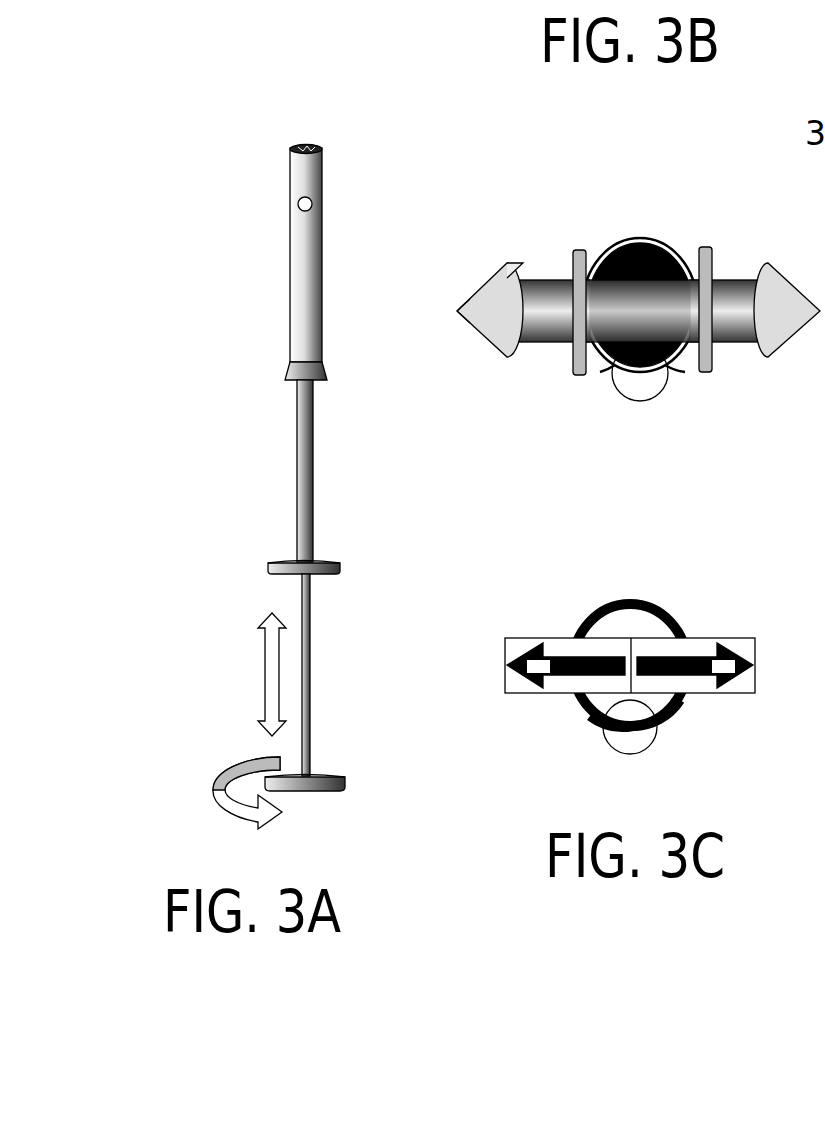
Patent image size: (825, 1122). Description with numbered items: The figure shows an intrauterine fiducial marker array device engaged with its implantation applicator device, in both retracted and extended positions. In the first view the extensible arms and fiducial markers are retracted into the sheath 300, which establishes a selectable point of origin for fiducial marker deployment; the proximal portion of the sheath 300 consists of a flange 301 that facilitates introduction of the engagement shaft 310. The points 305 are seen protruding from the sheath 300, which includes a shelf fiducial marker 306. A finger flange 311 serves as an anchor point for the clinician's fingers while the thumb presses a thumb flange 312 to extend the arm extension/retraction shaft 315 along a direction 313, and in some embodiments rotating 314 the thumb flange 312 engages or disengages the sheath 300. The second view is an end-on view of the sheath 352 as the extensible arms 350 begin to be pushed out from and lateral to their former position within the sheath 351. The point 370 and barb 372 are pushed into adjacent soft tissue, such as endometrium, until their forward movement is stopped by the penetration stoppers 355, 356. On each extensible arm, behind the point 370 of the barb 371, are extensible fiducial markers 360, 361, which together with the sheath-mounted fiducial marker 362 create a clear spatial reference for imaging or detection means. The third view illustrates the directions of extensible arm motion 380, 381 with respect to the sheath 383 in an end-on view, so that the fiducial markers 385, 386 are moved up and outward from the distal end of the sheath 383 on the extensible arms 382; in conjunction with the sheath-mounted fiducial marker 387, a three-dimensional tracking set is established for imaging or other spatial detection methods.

In FIG. 3A, the sheath 300 is at (298, 300).
In FIG. 3A, the flange 301 is at (290, 370).
In FIG. 3A, the points 305 is at (302, 143).
In FIG. 3A, the shelf fiducial marker 306 is at (296, 203).
In FIG. 3A, the engagement shaft 310 is at (302, 428).
In FIG. 3A, the finger flange 311 is at (268, 567).
In FIG. 3A, the thumb flange 312 is at (345, 790).
In FIG. 3A, the direction 313 is at (262, 668).
In FIG. 3A, the rotating 314 is at (213, 784).
In FIG. 3A, the arm extension/retraction shaft 315 is at (302, 600).
In FIG. 3B, the extensible arms 350 is at (680, 307).
In FIG. 3B, the sheath 351 is at (600, 372).
In FIG. 3B, the sheath 352 is at (685, 373).
In FIG. 3B, the penetration stopper 355 is at (578, 250).
In FIG. 3B, the penetration stopper 356 is at (705, 247).
In FIG. 3B, the extensible fiducial marker 360 is at (542, 272).
In FIG. 3B, the extensible fiducial marker 361 is at (737, 272).
In FIG. 3B, the sheath-mounted fiducial marker 362 is at (642, 402).
In FIG. 3B, the point 370 is at (468, 318).
In FIG. 3B, the barb 371 is at (482, 303).
In FIG. 3B, the barb 372 is at (514, 268).
In FIG. 3C, the extensible arm motion 380 is at (597, 660).
In FIG. 3C, the extensible arm motion 381 is at (660, 660).
In FIG. 3C, the extensible arms 382 is at (648, 678).
In FIG. 3C, the sheath 383 is at (683, 702).
In FIG. 3C, the fiducial marker 385 is at (541, 664).
In FIG. 3C, the fiducial marker 386 is at (714, 664).
In FIG. 3C, the sheath-mounted fiducial marker 387 is at (610, 748).